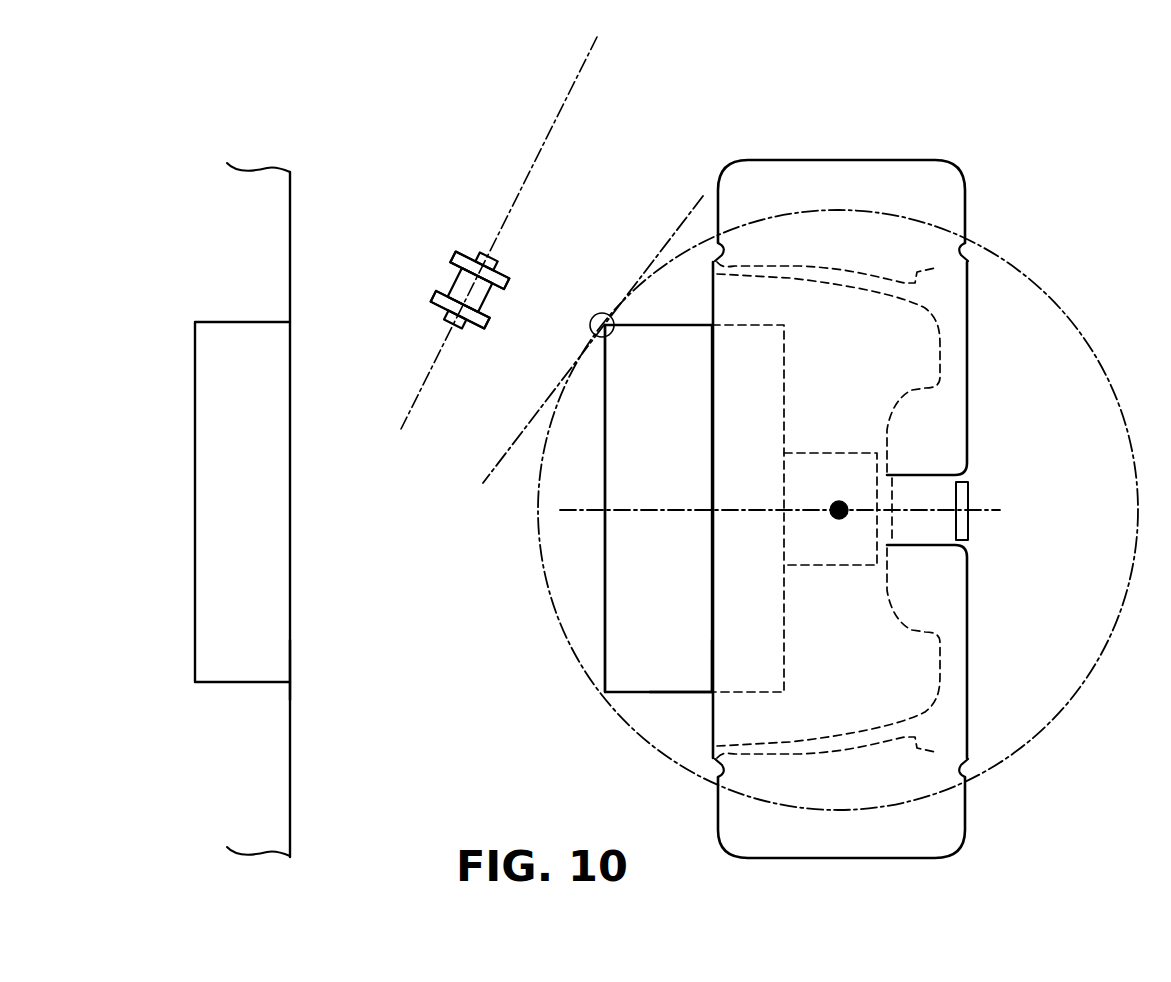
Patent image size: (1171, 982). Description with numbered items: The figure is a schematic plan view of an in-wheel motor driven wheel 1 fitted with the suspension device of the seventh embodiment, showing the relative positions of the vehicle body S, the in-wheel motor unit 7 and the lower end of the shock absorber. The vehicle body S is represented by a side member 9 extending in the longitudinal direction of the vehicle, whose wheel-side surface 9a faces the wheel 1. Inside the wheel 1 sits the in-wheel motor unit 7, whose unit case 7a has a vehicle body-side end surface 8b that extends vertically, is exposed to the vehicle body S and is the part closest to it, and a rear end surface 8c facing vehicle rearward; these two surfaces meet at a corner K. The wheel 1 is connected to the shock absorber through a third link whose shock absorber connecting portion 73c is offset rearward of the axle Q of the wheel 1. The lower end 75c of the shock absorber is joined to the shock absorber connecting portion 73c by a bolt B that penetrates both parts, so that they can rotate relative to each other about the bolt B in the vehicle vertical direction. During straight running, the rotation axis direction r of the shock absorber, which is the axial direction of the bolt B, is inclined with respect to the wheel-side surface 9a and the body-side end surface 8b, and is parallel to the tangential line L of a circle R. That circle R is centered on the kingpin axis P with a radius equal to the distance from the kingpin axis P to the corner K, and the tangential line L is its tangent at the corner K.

The wheel 1 is at (964, 161).
The in-wheel motor unit 7 is at (669, 446).
The unit case 7a is at (687, 650).
The vehicle body-side end surface 8b is at (605, 651).
The rear end surface 8c is at (660, 325).
The side member 9 is at (248, 516).
The wheel-side surface 9a is at (290, 655).
The shock absorber connecting portion 73c is at (472, 249).
The lower end of the shock absorber 75c is at (448, 283).
The vehicle body S is at (240, 258).
The bolt B is at (452, 312).
The rotation axis direction r is at (503, 224).
The circle R is at (633, 727).
The axle Q is at (793, 511).
The tangential line L is at (596, 328).
The corner K is at (586, 311).
The kingpin axis P is at (840, 519).